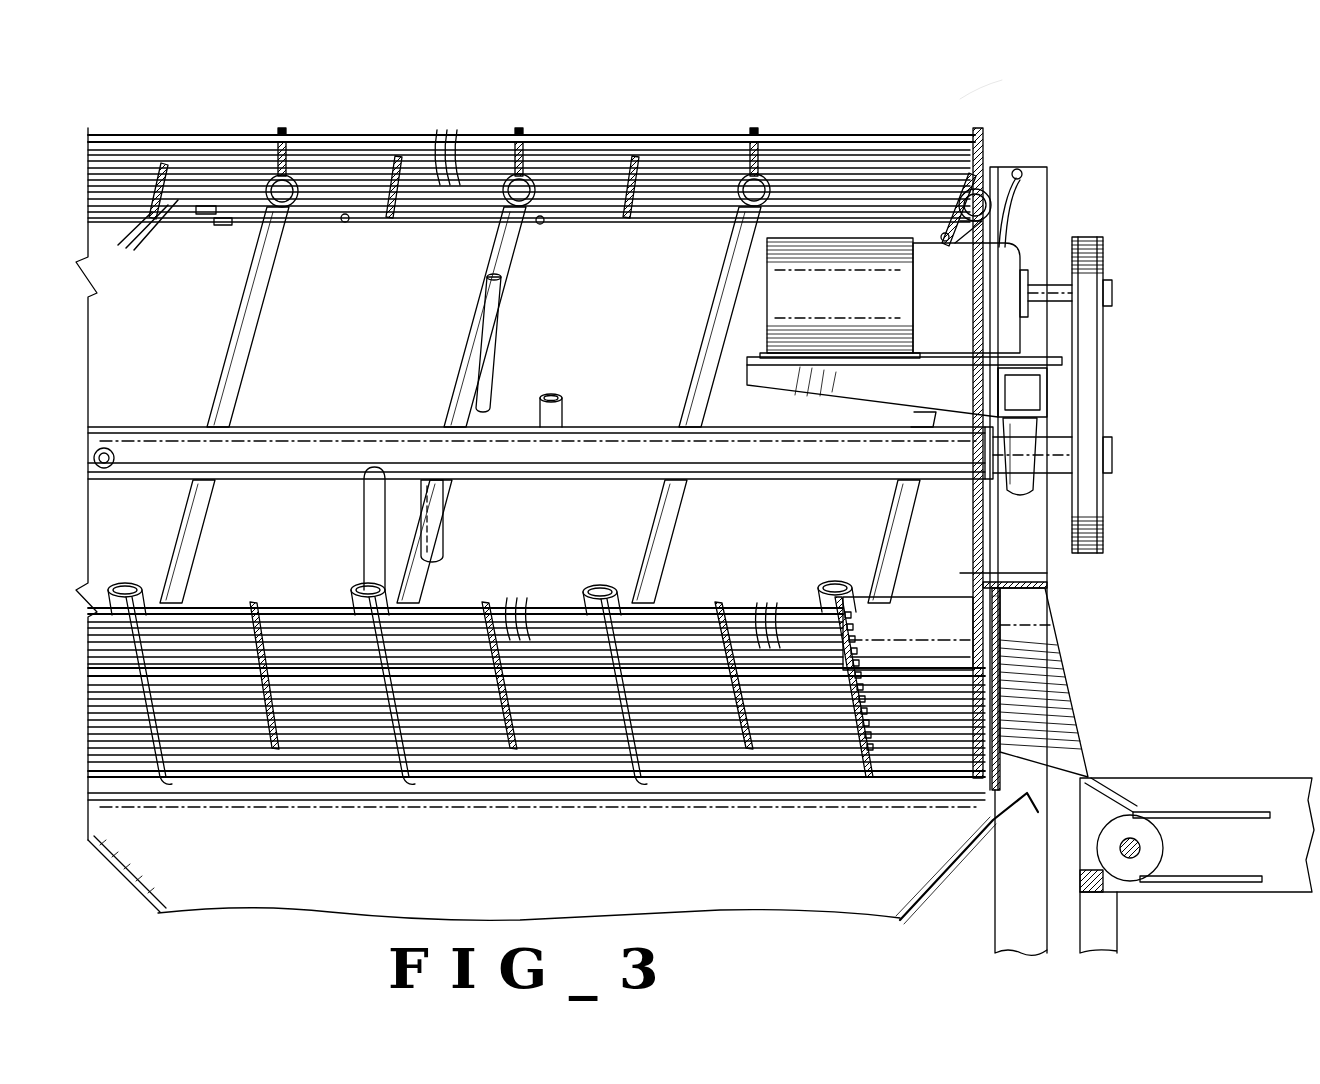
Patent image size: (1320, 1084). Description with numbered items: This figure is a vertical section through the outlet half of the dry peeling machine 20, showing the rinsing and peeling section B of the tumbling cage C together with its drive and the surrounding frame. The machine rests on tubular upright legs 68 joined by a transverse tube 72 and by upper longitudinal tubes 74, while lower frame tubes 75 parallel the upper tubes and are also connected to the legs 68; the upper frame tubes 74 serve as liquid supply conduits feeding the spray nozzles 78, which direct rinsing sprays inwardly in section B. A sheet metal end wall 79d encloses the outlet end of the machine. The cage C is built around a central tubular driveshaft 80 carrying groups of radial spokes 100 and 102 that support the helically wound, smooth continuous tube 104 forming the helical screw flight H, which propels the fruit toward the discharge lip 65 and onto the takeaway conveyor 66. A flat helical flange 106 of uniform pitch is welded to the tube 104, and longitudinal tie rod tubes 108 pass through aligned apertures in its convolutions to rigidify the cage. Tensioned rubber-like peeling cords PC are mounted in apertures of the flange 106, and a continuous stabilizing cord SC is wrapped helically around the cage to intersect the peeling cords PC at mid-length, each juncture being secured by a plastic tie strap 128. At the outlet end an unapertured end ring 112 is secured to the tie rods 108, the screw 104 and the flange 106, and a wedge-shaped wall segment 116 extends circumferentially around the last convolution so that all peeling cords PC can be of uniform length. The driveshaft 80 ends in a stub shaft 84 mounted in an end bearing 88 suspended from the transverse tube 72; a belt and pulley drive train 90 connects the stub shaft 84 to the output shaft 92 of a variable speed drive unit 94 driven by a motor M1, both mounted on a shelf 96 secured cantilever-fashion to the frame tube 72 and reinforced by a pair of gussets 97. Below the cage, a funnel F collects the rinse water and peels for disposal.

The dry peeling machine 20 is at (952, 104).
The rinsing and peeling section B is at (585, 131).
The tumbling cage C is at (988, 132).
The helical screw flight H is at (242, 270).
The helically wound continuous tube 104 is at (220, 375).
The helical flange 106 is at (282, 133).
The longitudinal tie rod tubes 108 is at (164, 139).
The central tubular driveshaft 80 is at (633, 430).
The radial spokes 100 is at (115, 458).
The radial spokes 102 is at (540, 422).
The motor M1 is at (820, 304).
The variable speed drive unit 94 is at (948, 309).
The output shaft 92 is at (1115, 293).
The belt and pulley drive train 90 is at (1090, 355).
The stub shaft 84 is at (1115, 447).
The end bearing 88 is at (1008, 452).
The shelf 96 is at (745, 361).
The gussets 97 is at (857, 393).
The transverse tube 72 is at (1000, 385).
The longitudinal tubes 74 is at (995, 165).
The sheet metal end wall 79d is at (1010, 202).
The wall segment 116 is at (897, 170).
The end ring 112 is at (977, 653).
The discharge lip 65 is at (1068, 688).
The tubular upright legs 68 is at (1000, 915).
The frame tubes 75 is at (982, 855).
The takeaway conveyor 66 is at (1205, 813).
The funnel F is at (480, 869).
The plastic tie strap 128 is at (273, 635).
The stabilizing cord SC is at (730, 607).
The peeling cords PC is at (614, 373).
The spray nozzles 78 is at (952, 232).